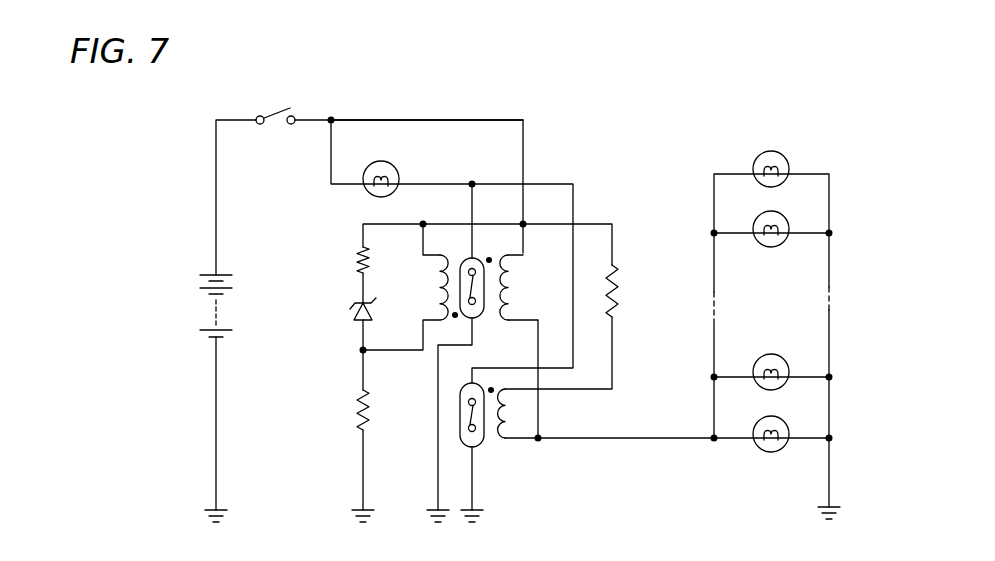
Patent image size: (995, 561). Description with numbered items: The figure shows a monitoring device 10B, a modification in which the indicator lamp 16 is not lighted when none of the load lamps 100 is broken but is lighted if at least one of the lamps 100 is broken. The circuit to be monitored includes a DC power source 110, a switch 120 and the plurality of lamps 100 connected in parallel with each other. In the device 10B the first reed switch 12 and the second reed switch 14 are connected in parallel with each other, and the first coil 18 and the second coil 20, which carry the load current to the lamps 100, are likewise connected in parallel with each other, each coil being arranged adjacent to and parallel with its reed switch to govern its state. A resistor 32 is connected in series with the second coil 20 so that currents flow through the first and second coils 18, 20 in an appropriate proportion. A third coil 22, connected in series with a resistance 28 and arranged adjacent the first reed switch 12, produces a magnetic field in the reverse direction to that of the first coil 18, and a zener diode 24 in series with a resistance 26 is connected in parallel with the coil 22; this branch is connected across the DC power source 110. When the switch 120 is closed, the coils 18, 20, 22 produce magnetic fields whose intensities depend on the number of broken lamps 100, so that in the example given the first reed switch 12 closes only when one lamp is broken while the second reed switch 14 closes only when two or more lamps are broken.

The monitoring device 10B is at (449, 112).
The switch 120 is at (273, 110).
The DC power source 110 is at (210, 308).
The indicator lamp 16 is at (393, 166).
The resistance 26 is at (354, 254).
The zener diode 24 is at (355, 313).
The resistance 28 is at (357, 423).
The third coil 22 is at (443, 286).
The first coil 18 is at (508, 286).
The first reed switch 12 is at (479, 318).
The second reed switch 14 is at (467, 443).
The second coil 20 is at (503, 440).
The resistor 32 is at (618, 268).
The loads (lamps) 100 is at (789, 143).